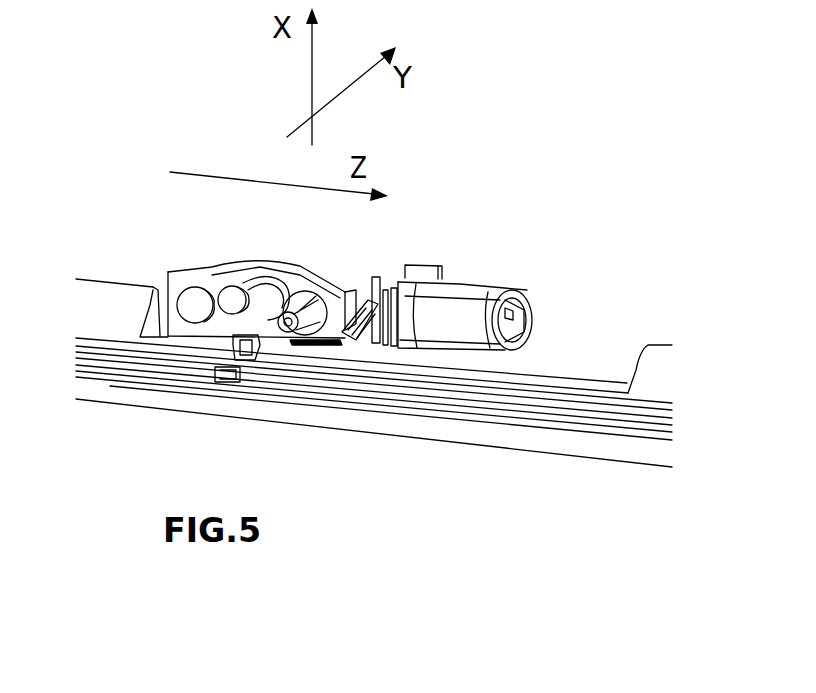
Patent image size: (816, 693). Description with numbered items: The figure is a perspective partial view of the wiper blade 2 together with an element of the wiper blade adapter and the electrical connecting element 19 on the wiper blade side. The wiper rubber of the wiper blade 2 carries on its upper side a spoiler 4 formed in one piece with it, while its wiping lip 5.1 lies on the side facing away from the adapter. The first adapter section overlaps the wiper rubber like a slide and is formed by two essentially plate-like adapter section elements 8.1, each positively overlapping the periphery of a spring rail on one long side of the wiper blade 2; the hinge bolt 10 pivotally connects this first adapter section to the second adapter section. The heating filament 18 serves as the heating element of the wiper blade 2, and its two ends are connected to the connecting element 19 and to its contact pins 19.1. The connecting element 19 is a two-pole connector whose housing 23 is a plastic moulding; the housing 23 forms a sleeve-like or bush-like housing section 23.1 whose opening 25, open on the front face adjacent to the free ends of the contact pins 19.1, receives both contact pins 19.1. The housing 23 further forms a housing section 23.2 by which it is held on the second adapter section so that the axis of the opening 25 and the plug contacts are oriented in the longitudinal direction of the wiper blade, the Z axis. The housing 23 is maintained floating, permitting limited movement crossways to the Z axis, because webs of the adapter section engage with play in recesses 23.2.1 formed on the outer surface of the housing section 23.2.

The wiper blade 2 is at (496, 465).
The spoiler 4 is at (92, 296).
The wiping lip 5.1 is at (303, 425).
The adapter section element 8.1 is at (177, 285).
The hinge bolt 10 is at (268, 262).
The heating filament 18 is at (210, 372).
The electrical connecting element 19 is at (492, 244).
The contact pins 19.1 is at (528, 314).
The housing 23 is at (522, 272).
The housing section 23.1 is at (461, 332).
The housing section 23.2 is at (397, 346).
The recesses 23.2.1 is at (386, 282).
The opening 25 is at (530, 336).